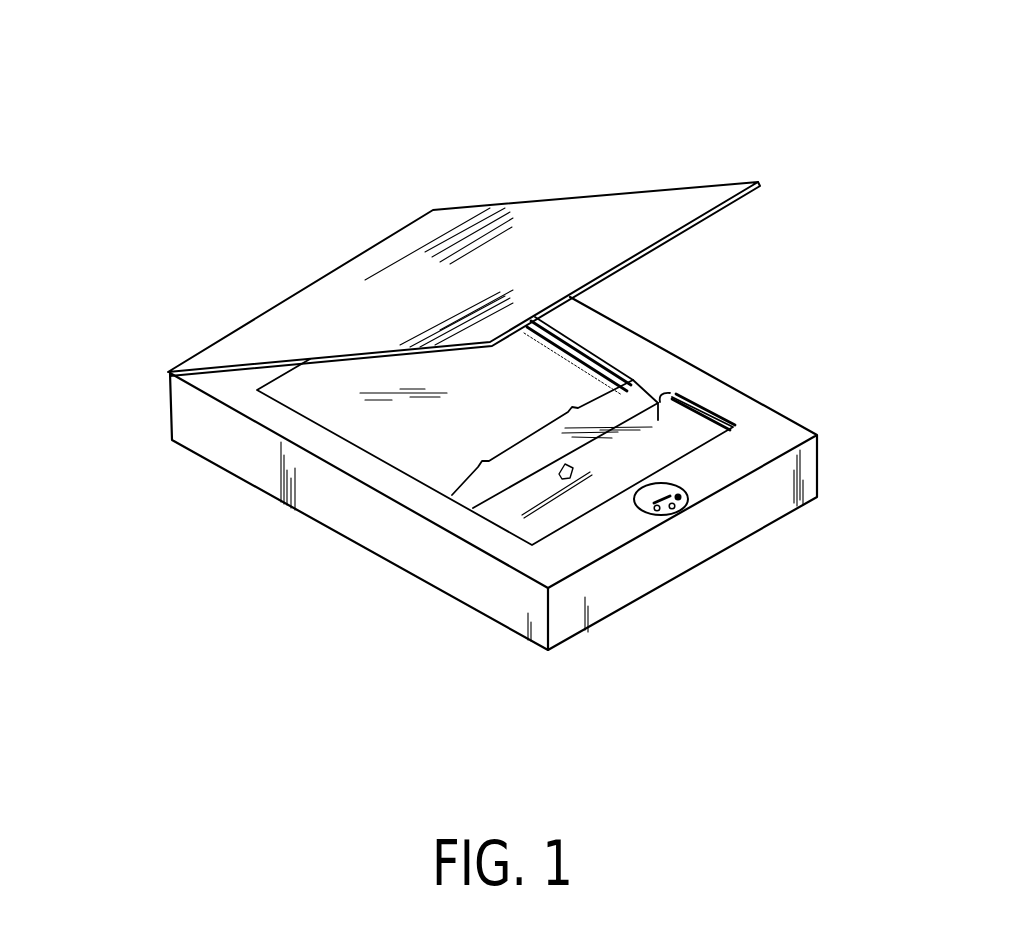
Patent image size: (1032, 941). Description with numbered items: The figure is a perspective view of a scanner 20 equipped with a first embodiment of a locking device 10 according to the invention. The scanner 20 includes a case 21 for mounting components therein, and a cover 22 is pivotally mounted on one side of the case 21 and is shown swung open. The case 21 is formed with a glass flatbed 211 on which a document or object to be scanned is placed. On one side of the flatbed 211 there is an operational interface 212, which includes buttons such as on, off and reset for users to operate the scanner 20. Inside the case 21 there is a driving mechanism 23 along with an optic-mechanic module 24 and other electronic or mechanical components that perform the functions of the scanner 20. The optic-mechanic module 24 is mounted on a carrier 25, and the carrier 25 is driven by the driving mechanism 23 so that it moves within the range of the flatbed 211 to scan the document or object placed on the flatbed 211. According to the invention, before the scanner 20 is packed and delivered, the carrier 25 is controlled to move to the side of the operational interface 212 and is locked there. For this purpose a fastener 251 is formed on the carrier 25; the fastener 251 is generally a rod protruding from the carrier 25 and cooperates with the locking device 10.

The locking device 10 is at (790, 396).
The scanner 20 is at (625, 138).
The case 21 is at (427, 570).
The glass flatbed 211 is at (333, 408).
The operational interface 212 is at (636, 521).
The cover 22 is at (545, 220).
The driving mechanism 23 is at (604, 364).
The optic-mechanic module 24 is at (473, 489).
The carrier 25 is at (647, 438).
The fastener 251 is at (562, 472).